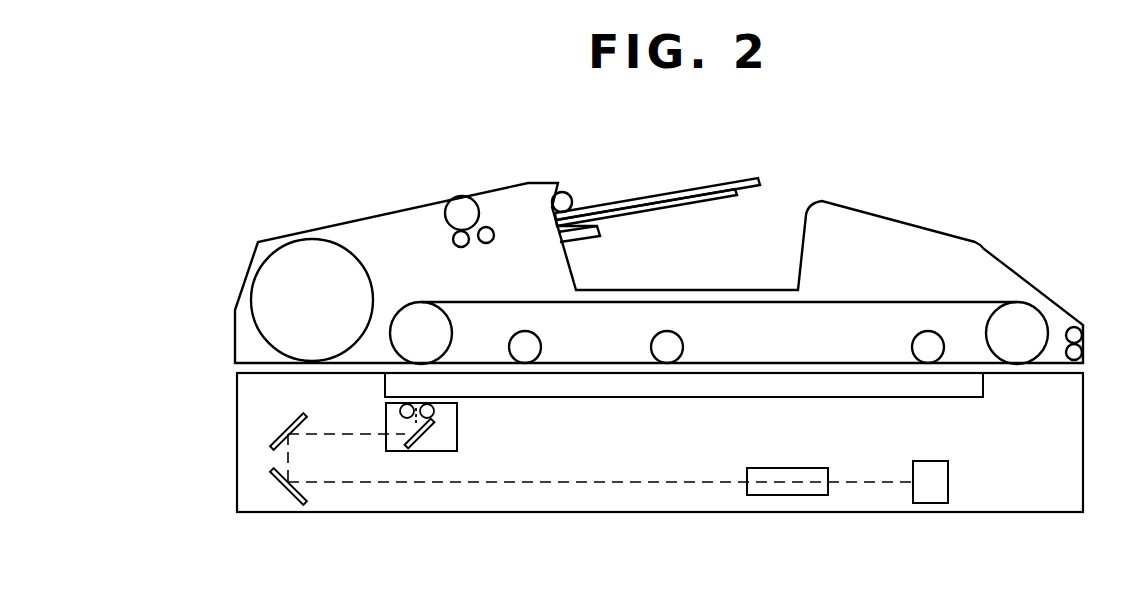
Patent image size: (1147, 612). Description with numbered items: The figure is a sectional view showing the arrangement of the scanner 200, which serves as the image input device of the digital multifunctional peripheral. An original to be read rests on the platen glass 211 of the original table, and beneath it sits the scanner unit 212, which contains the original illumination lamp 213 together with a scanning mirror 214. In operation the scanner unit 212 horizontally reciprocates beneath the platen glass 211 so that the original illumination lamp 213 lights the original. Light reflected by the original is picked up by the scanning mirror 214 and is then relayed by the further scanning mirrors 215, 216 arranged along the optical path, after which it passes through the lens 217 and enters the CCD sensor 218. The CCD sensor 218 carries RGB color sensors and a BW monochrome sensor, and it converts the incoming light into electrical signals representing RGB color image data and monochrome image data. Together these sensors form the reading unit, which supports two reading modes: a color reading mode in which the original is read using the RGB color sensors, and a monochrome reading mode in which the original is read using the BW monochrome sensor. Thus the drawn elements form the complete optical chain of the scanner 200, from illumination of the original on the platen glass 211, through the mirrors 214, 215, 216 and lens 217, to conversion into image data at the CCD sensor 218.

The scanner 200 is at (993, 270).
The platen glass 211 is at (972, 398).
The scanner unit 212 is at (457, 440).
The original illumination lamp 213 is at (433, 410).
The scanning mirror 214 is at (428, 428).
The scanning mirror 215 is at (287, 433).
The scanning mirror 216 is at (283, 490).
The lens 217 is at (787, 495).
The CCD sensor 218 is at (930, 503).